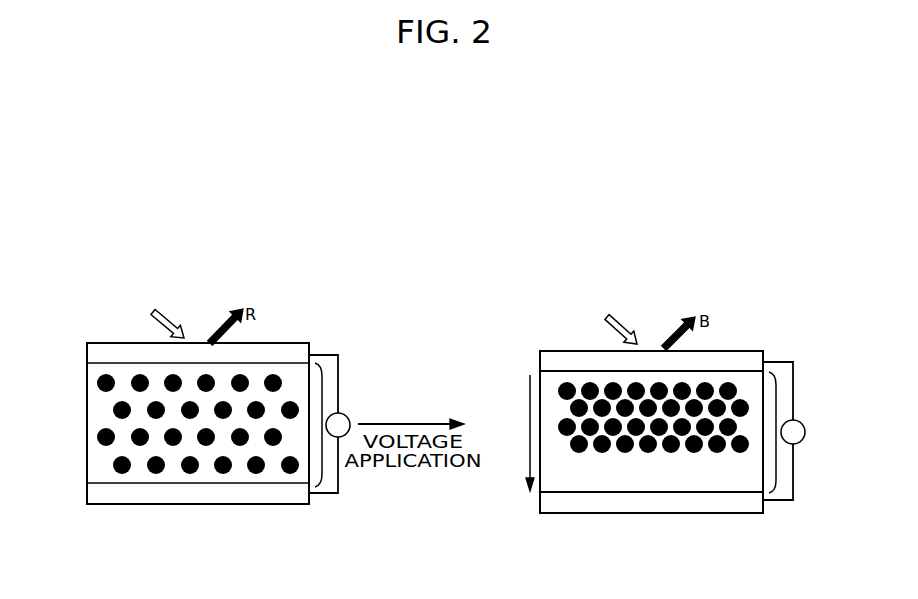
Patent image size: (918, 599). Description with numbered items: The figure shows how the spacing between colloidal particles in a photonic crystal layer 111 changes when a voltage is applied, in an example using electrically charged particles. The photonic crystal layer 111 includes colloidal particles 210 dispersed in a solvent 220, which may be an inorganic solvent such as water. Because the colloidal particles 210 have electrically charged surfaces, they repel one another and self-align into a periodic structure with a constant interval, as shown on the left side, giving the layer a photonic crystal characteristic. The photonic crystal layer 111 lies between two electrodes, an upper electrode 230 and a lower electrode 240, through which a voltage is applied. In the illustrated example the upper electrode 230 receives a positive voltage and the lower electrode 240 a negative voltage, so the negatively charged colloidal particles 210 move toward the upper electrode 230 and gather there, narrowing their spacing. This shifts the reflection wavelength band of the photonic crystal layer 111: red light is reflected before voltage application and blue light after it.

The upper electrode 230 is at (99, 353).
The colloidal particles 210 is at (99, 383).
The solvent 220 is at (99, 413).
The lower electrode 240 is at (99, 494).
The photonic crystal layer 111 is at (323, 379).